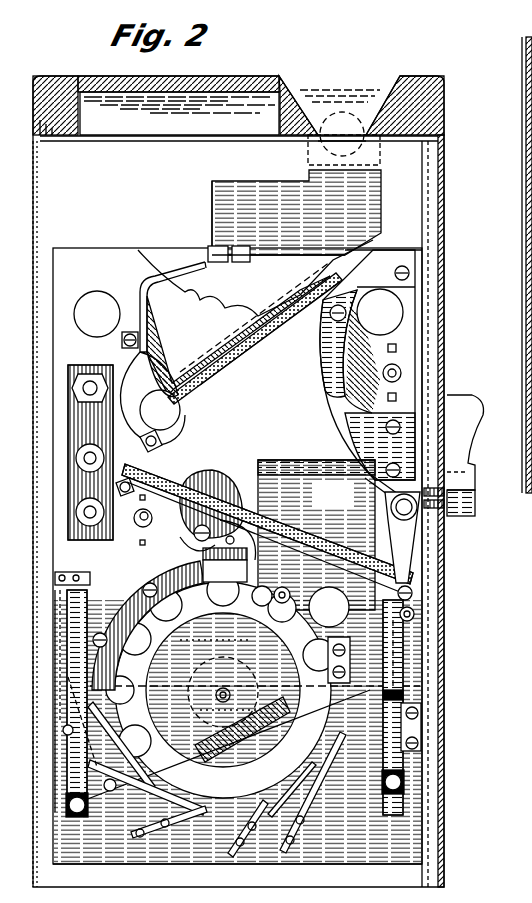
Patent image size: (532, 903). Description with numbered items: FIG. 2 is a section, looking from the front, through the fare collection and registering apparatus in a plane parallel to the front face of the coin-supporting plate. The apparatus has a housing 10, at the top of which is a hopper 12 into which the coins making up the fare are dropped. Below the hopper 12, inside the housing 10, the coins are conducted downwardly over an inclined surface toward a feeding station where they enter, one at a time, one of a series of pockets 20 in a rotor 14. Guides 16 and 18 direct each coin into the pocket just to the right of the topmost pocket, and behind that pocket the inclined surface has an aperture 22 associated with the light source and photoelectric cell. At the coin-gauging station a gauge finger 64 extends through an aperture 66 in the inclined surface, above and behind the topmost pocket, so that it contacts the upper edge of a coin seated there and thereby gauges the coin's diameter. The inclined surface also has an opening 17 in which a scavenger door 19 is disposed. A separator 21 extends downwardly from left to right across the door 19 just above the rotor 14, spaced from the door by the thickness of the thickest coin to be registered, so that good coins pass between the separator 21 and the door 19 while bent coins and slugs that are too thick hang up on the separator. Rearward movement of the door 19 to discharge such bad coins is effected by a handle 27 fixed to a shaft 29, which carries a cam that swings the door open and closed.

The housing 10 is at (454, 283).
The hopper 12 is at (349, 96).
The rotor 14 is at (252, 687).
The guide 16 is at (223, 490).
The opening 17 is at (283, 458).
The guide 18 is at (416, 605).
The scavenger door 19 is at (316, 535).
The pockets 20 is at (125, 578).
The separator 21 is at (412, 552).
The aperture 22 is at (287, 586).
The handle 27 is at (467, 402).
The shaft 29 is at (424, 498).
The gauge finger 64 is at (192, 534).
The aperture 66 is at (219, 576).